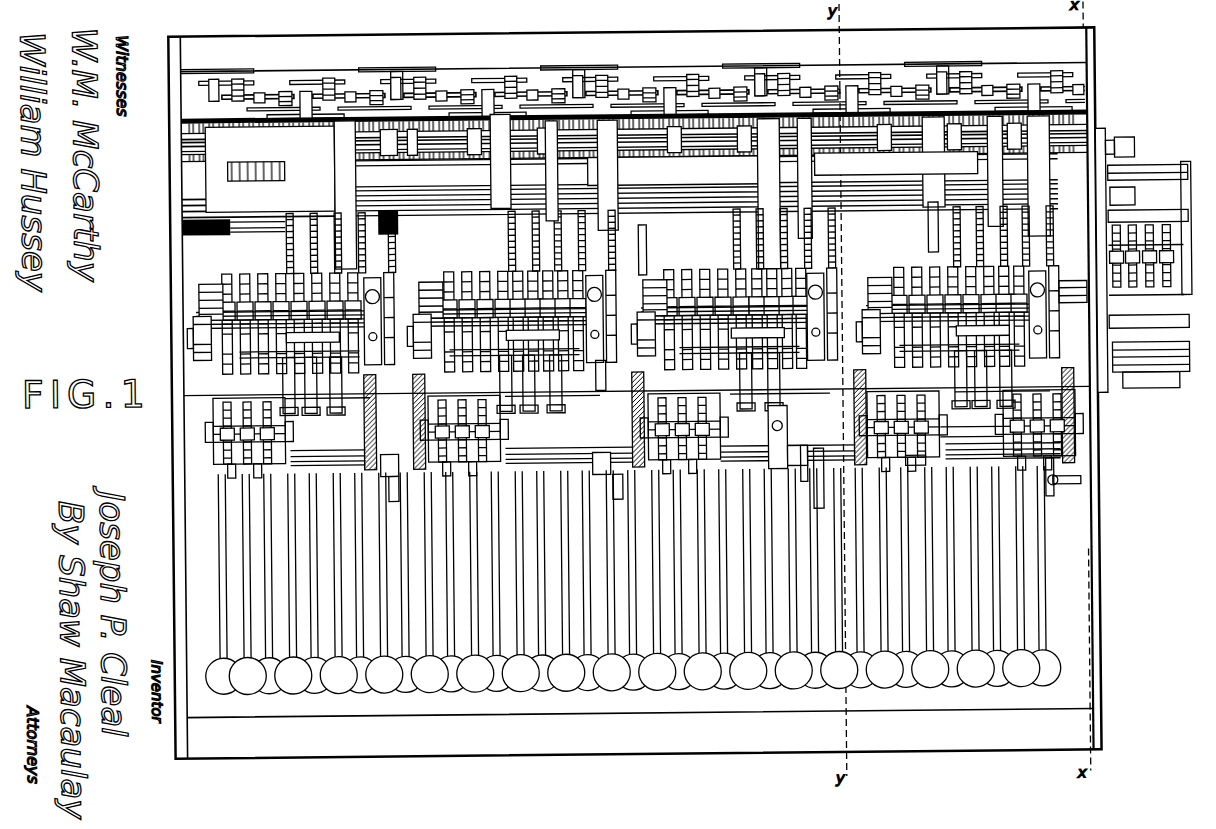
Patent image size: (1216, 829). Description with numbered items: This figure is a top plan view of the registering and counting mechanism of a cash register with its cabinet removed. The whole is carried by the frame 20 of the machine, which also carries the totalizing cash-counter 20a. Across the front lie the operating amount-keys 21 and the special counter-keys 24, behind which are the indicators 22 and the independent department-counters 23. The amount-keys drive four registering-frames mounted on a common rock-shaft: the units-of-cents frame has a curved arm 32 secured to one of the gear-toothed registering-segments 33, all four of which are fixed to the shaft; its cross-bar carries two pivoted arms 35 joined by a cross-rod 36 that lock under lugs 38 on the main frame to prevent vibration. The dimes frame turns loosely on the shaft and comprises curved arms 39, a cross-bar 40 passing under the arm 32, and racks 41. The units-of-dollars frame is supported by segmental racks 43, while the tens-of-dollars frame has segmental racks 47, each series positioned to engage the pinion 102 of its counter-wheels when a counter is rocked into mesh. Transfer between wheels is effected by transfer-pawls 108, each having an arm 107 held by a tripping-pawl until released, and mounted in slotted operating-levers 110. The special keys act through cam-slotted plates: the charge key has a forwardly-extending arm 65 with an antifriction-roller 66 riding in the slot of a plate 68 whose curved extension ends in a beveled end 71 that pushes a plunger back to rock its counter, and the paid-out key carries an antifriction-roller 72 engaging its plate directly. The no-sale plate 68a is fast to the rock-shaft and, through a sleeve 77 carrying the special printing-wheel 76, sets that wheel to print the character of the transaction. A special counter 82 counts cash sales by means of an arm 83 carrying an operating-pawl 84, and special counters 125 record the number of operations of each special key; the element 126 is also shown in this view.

The frame 20 is at (172, 568).
The totalizing cash-counter 20a is at (930, 255).
The operating amount-keys 21 is at (936, 690).
The indicators 22 is at (1010, 78).
The independent department-counters 23 is at (623, 310).
The special counter-keys 24 is at (815, 690).
The curved arm 32 is at (824, 178).
The gear-toothed registering-segments 33 is at (1030, 180).
The pivoted arms 35 is at (1030, 150).
The cross-rod 36 is at (735, 142).
The lugs 38 is at (245, 118).
The curved arms 39 is at (978, 176).
The cross-bar 40 is at (706, 164).
The racks 41 is at (832, 258).
The segmental racks 43 is at (885, 222).
The segmental racks 47 is at (955, 240).
The forwardly-extending arm 65 is at (467, 435).
The antifriction-roller 66 is at (620, 490).
The plate 68 is at (590, 466).
The plate of no-sale key 68a is at (1058, 480).
The beveled end 71 is at (600, 385).
The antifriction-roller 72 is at (1050, 495).
The special printing-wheel 76 is at (1132, 315).
The sleeve 77 is at (1082, 305).
The special counter 82 is at (900, 400).
The arm 83 is at (915, 462).
The operating-pawl 84 is at (940, 438).
The pinion 102 is at (336, 362).
The arm 107 is at (780, 348).
The transfer-pawls 108 is at (770, 395).
The operating-levers 110 is at (740, 376).
The special counters 125 is at (560, 438).
The hatched plates 126 is at (1000, 420).